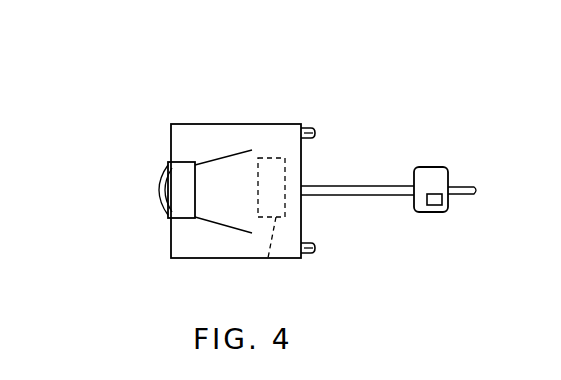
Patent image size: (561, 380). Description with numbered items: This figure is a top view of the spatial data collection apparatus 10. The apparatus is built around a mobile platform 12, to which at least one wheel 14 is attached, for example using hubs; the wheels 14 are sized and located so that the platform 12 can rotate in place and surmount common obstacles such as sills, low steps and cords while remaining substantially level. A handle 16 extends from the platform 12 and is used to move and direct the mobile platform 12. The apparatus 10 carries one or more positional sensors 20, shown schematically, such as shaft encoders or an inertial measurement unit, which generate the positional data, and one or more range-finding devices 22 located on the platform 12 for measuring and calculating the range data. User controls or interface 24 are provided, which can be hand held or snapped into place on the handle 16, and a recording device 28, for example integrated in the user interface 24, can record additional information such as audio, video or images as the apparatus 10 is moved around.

The spatial data collection apparatus 10 is at (184, 74).
The mobile platform 12 is at (168, 137).
The wheel 14 is at (313, 128).
The handle 16 is at (333, 198).
The positional sensor 20 is at (262, 258).
The range-finding device 22 is at (142, 193).
The user controls or interface 24 is at (428, 167).
The recording device 28 is at (432, 206).